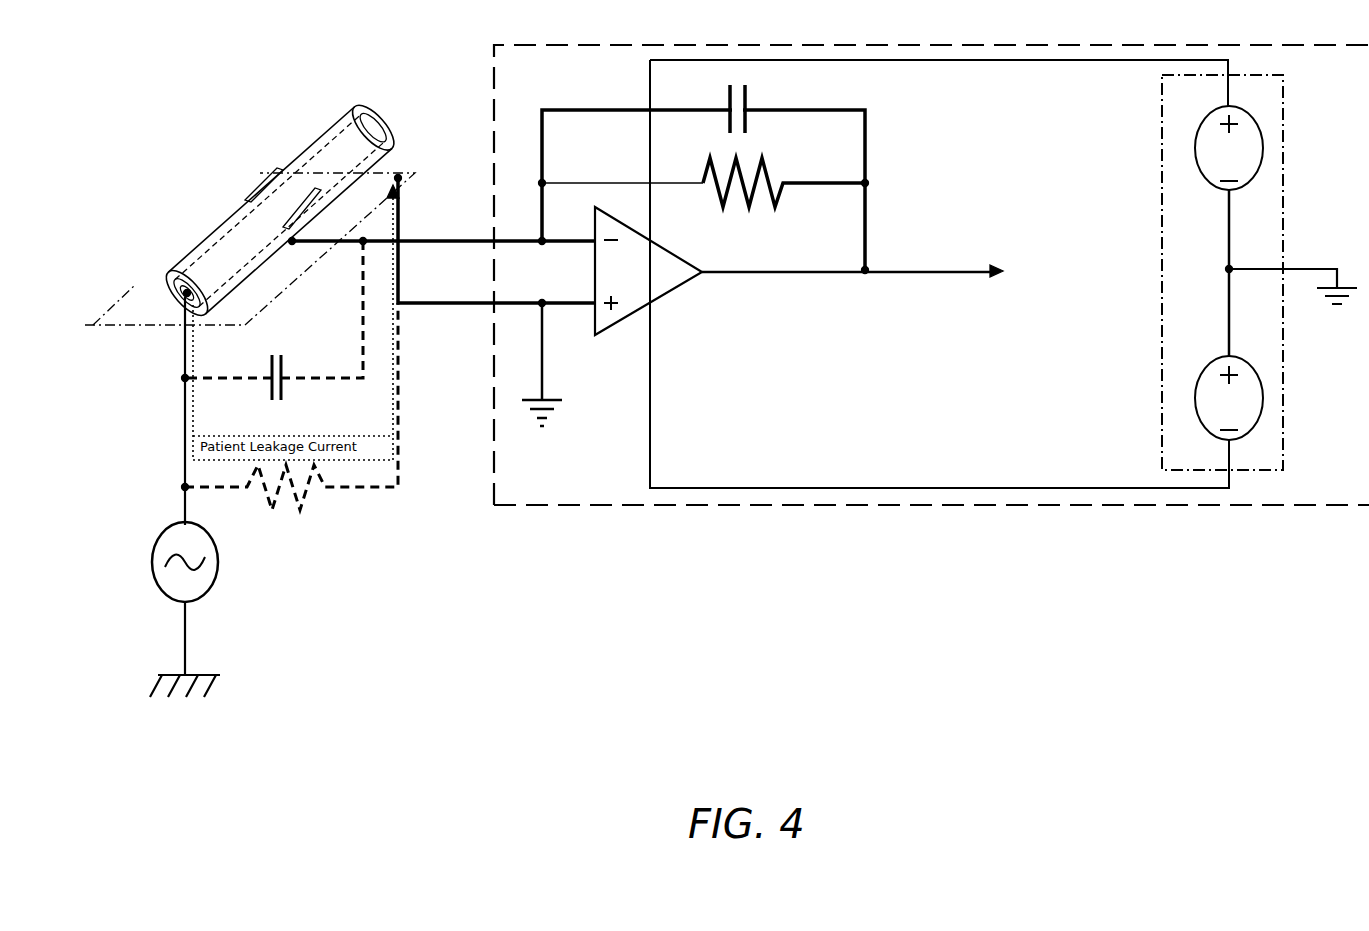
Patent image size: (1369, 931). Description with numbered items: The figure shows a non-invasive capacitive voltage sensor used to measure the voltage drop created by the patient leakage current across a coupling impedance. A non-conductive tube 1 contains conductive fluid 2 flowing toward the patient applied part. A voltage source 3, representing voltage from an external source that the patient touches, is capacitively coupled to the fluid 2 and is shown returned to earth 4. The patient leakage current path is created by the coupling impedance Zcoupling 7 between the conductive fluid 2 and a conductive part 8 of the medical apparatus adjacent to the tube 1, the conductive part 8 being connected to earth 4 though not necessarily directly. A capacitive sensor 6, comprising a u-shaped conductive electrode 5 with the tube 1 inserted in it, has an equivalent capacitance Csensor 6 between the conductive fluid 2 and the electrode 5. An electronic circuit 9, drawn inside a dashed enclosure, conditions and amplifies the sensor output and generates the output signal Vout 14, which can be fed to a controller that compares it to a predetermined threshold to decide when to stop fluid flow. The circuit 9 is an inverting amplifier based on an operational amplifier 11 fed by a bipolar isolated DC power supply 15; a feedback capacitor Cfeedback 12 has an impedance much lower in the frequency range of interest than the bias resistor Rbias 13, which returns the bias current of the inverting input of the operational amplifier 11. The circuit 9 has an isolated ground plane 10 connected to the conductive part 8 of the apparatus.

The non-conductive tube 1 is at (162, 240).
The conductive fluid 2 is at (152, 292).
The voltage source 3 is at (152, 552).
The earth 4 is at (160, 672).
The u-shaped conductive electrode 5 is at (232, 180).
The capacitive sensor 6 is at (287, 358).
The coupling impedance Zcoupling 7 is at (325, 500).
The conductive part 8 is at (405, 165).
The electronic circuit 9 is at (695, 508).
The isolated ground plane 10 is at (565, 399).
The operational amplifier 11 is at (668, 290).
The feedback capacitor Cfeedback 12 is at (748, 96).
The bias resistor Rbias 13 is at (783, 208).
The output signal Vout 14 is at (988, 262).
The bipolar isolated DC power supply 15 is at (1158, 141).